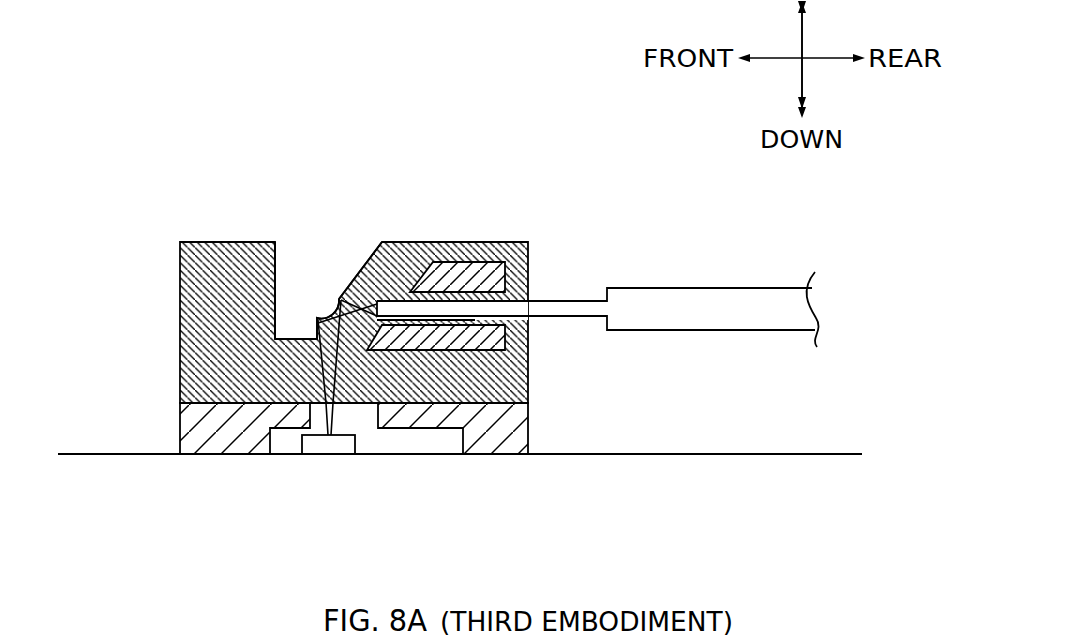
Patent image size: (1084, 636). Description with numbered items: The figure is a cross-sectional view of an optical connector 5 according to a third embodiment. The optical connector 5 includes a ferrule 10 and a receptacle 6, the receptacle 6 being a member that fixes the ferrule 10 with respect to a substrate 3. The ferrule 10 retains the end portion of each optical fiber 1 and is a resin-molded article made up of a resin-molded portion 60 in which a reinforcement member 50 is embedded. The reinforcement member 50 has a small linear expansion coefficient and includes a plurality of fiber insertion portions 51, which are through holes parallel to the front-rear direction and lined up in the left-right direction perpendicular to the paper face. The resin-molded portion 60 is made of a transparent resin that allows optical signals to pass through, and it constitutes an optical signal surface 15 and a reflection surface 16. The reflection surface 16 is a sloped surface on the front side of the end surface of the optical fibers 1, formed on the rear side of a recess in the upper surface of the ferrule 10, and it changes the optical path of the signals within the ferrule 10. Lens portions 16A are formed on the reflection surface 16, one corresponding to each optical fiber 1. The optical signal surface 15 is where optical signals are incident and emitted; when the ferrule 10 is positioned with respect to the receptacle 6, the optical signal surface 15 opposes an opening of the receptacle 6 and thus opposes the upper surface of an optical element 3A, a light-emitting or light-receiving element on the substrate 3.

The optical fiber 1 is at (573, 300).
The substrate 3 is at (790, 454).
The optical element 3A is at (328, 445).
The optical connector 5 is at (137, 150).
The receptacle 6 is at (193, 432).
The ferrule 10 is at (158, 243).
The optical signal surface 15 is at (358, 403).
The reflection surface 16 is at (347, 290).
The lens portion 16A is at (318, 302).
The reinforcement member 50 is at (472, 277).
The fiber insertion portion 51 is at (475, 320).
The resin-molded portion 60 is at (232, 250).